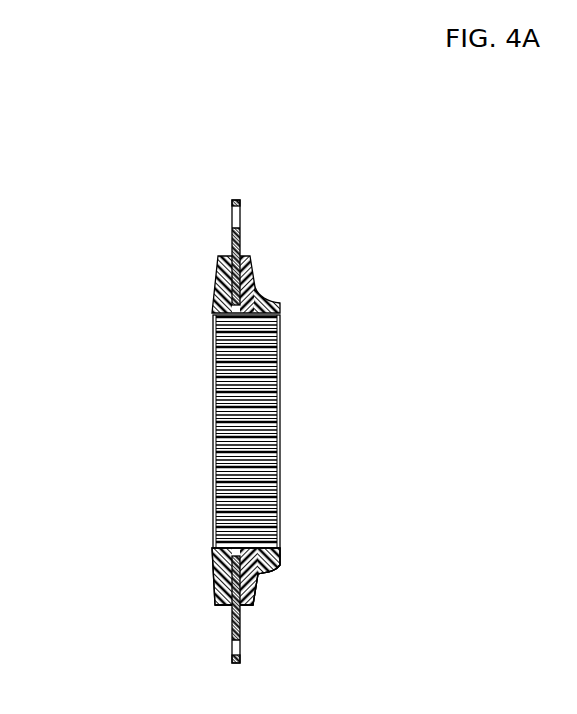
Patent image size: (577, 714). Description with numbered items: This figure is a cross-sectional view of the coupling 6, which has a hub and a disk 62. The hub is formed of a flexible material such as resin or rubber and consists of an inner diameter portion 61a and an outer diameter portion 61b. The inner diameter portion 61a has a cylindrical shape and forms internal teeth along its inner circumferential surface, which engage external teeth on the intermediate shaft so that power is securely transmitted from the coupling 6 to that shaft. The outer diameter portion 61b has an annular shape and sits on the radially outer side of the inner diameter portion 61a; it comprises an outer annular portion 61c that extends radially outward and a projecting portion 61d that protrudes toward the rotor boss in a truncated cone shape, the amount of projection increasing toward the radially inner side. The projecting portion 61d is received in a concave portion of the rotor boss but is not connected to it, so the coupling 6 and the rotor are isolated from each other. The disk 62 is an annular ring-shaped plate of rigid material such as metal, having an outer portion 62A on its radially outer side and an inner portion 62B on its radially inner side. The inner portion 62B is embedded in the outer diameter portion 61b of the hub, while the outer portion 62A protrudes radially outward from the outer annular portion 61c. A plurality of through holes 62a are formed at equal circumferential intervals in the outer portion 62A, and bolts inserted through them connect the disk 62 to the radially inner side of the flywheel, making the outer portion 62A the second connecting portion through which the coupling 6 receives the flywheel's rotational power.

The coupling 6 is at (314, 219).
The inner diameter portion 61a is at (268, 518).
The outer diameter portion 61b is at (375, 568).
The outer annular portion 61c is at (243, 613).
The projecting portion 61d is at (270, 566).
The disk 62 is at (137, 570).
The outer portion 62A is at (226, 626).
The inner portion 62B is at (215, 586).
The through holes 62a is at (231, 210).